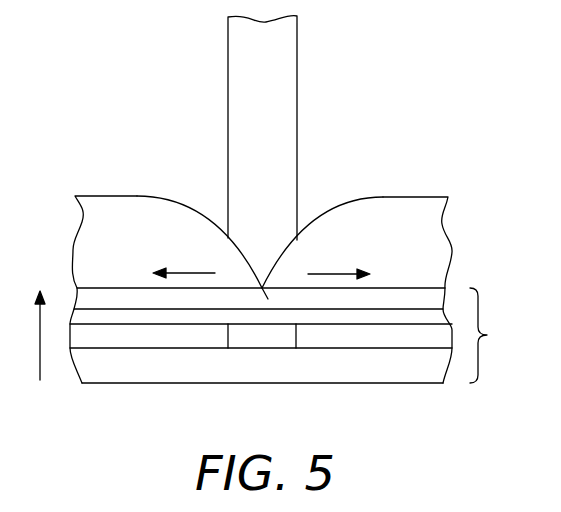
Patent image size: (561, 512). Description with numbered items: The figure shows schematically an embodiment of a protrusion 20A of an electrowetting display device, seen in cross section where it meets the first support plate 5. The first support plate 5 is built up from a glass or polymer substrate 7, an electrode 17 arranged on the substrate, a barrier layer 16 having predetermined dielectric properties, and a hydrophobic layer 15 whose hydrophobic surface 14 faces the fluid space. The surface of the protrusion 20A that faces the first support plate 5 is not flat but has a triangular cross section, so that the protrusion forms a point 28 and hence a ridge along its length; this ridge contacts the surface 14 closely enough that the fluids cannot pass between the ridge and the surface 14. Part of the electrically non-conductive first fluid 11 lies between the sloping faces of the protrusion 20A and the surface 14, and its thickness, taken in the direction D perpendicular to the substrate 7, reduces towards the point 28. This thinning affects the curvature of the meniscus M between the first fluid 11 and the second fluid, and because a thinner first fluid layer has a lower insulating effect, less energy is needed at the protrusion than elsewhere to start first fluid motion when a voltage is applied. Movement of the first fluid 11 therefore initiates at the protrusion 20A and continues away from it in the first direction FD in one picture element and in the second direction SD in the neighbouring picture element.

The protrusion 20A is at (238, 73).
The meniscus M is at (349, 204).
The first fluid 11 is at (414, 219).
The hydrophobic surface 14 is at (425, 288).
The hydrophobic layer 15 is at (113, 300).
The barrier layer 16 is at (407, 317).
The electrode 17 is at (328, 338).
The point 28 is at (263, 350).
The substrate 7 is at (120, 367).
The first support plate 5 is at (489, 335).
The second direction SD is at (177, 272).
The first direction FD is at (345, 272).
The direction perpendicular to the substrate D is at (29, 335).